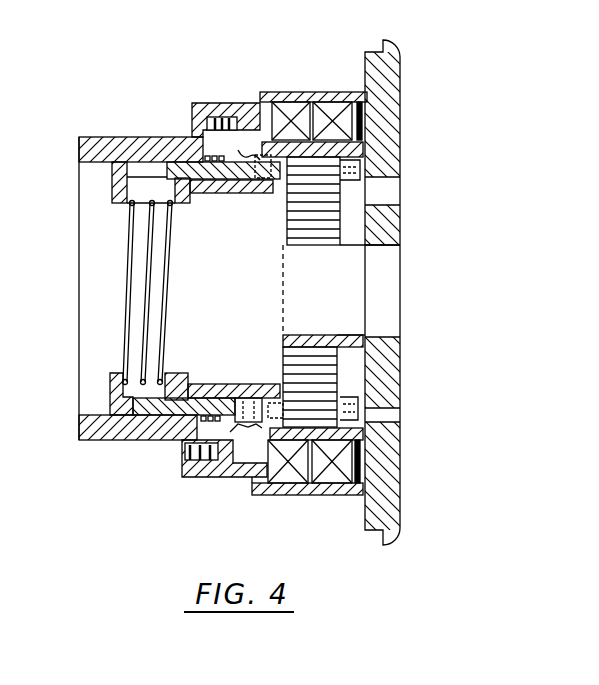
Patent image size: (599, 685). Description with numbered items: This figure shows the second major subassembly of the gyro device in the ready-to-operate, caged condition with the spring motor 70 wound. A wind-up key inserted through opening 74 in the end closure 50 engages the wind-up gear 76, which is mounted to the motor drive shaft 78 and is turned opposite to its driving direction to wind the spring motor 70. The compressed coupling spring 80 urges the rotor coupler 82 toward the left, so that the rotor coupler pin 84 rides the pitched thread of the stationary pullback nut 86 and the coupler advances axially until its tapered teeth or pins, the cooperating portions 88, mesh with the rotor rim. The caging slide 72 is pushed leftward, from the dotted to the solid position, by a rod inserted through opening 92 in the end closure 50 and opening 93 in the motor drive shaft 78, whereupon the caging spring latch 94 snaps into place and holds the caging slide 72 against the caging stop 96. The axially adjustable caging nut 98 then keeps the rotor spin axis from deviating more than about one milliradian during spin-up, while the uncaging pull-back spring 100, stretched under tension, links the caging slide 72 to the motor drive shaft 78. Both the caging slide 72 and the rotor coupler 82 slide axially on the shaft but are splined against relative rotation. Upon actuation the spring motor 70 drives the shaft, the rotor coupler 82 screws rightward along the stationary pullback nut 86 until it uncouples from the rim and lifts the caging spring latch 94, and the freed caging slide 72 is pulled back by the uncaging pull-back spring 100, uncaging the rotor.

The end closure 50 is at (388, 373).
The spring motor 70 is at (340, 202).
The caging slide 72 is at (255, 153).
The opening 74 is at (385, 200).
The wind-up gear 76 is at (342, 171).
The motor drive shaft 78 is at (243, 193).
The coupling spring 80 is at (218, 477).
The rotor coupler 82 is at (138, 145).
The rotor coupler pin 84 is at (207, 112).
The stationary pullback nut 86 is at (235, 108).
The cooperating portions 88 is at (95, 137).
The opening 92 is at (382, 415).
The opening 93 is at (257, 397).
The caging spring latch 94 is at (211, 421).
The caging stop 96 is at (182, 373).
The caging nut 98 is at (118, 392).
The uncaging pull-back spring 100 is at (170, 288).